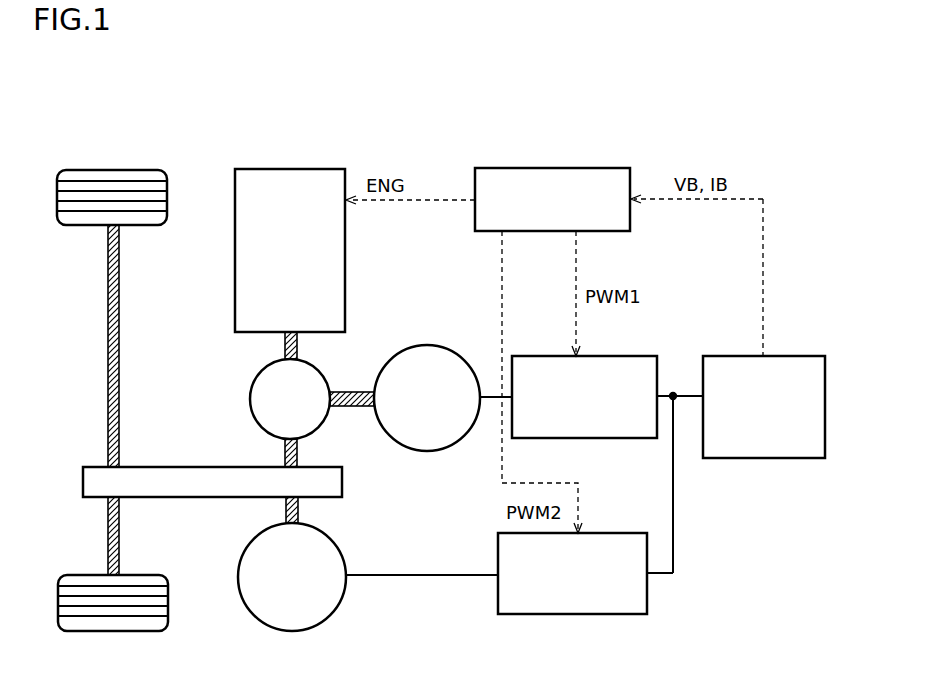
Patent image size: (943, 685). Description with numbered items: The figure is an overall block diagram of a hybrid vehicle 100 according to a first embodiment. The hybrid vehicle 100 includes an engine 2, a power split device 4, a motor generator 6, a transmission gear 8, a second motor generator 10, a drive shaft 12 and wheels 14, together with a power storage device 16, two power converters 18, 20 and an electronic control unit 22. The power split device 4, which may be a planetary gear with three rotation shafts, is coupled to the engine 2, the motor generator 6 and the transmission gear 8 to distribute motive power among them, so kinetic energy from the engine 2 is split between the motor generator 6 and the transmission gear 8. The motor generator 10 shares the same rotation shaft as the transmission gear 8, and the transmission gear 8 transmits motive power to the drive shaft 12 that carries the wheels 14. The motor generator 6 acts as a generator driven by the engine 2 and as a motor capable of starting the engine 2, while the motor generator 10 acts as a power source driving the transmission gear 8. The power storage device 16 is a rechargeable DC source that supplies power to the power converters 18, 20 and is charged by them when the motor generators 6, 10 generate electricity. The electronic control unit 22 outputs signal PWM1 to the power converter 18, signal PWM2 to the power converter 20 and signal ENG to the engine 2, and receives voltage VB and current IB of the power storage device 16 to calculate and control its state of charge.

The hybrid vehicle 100 is at (109, 102).
The engine 2 is at (312, 169).
The power split device 4 is at (262, 373).
The motor generator 6 is at (392, 355).
The transmission gear 8 is at (193, 467).
The motor generator 10 is at (262, 528).
The drive shaft 12 is at (108, 350).
The wheels 14 is at (128, 170).
The power storage device 16 is at (806, 356).
The power converter 18 is at (632, 356).
The power converter 20 is at (622, 533).
The electronic control unit 22 is at (590, 168).